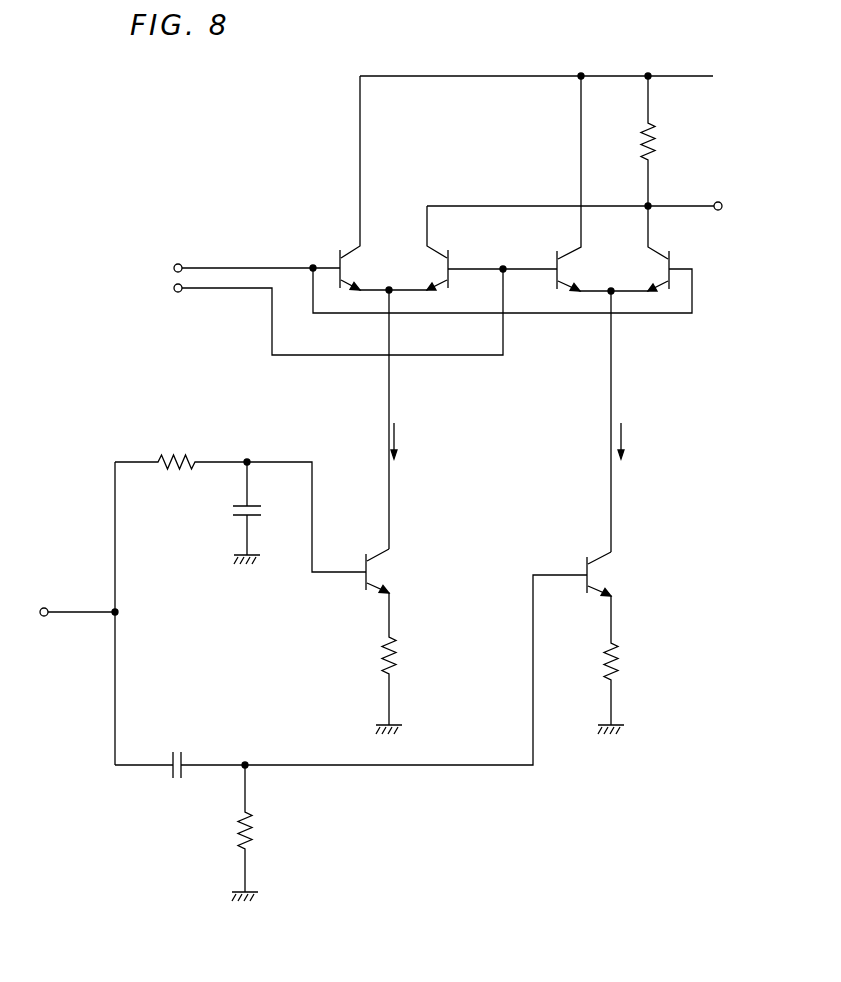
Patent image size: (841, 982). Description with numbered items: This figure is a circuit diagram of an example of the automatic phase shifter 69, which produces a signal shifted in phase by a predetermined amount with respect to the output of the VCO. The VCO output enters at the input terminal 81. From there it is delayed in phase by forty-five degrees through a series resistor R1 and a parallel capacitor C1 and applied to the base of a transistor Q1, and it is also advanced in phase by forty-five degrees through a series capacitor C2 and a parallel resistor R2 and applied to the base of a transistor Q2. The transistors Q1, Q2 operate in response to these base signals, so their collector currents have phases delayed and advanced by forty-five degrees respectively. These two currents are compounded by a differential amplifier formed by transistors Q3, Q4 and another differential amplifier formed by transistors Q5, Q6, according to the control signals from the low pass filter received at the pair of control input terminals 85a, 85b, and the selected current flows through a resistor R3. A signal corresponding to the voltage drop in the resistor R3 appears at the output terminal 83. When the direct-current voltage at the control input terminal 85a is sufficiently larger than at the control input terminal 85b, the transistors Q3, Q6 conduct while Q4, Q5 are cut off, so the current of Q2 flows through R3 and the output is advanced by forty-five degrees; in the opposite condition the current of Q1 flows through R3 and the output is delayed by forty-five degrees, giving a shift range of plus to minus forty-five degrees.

The automatic phase shifter 69 is at (226, 156).
The input terminal 81 is at (46, 608).
The output terminal 83 is at (715, 203).
The control input terminal 85a is at (180, 263).
The control input terminal 85b is at (183, 293).
The transistor Q1 is at (375, 569).
The transistor Q2 is at (598, 570).
The transistor Q3 is at (352, 247).
The transistor Q4 is at (431, 249).
The transistor Q5 is at (575, 250).
The transistor Q6 is at (650, 250).
The series resistor R1 is at (182, 455).
The parallel resistor R2 is at (240, 820).
The resistor R3 is at (642, 139).
The parallel capacitor C1 is at (232, 512).
The series capacitor C2 is at (178, 751).